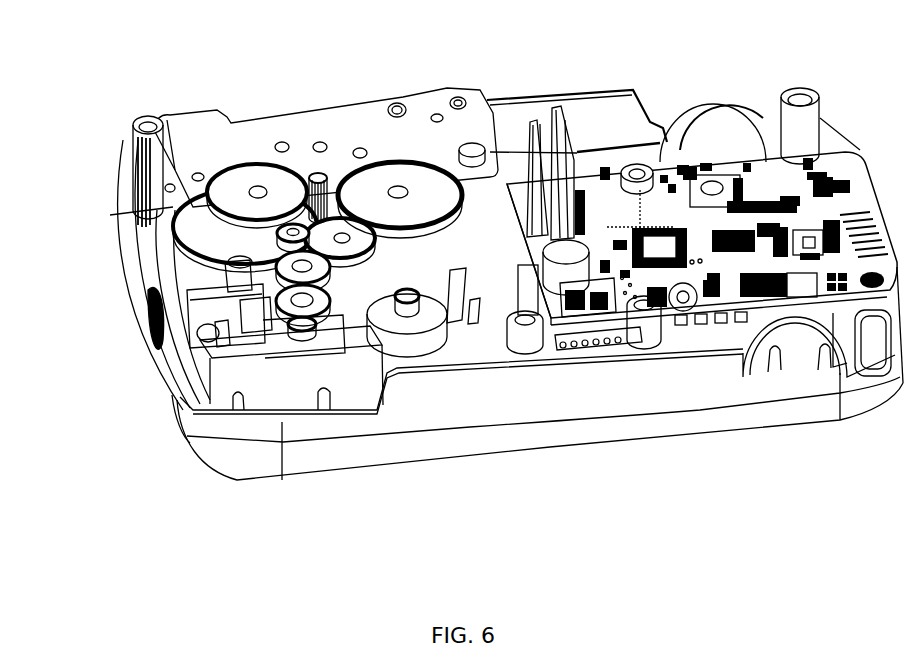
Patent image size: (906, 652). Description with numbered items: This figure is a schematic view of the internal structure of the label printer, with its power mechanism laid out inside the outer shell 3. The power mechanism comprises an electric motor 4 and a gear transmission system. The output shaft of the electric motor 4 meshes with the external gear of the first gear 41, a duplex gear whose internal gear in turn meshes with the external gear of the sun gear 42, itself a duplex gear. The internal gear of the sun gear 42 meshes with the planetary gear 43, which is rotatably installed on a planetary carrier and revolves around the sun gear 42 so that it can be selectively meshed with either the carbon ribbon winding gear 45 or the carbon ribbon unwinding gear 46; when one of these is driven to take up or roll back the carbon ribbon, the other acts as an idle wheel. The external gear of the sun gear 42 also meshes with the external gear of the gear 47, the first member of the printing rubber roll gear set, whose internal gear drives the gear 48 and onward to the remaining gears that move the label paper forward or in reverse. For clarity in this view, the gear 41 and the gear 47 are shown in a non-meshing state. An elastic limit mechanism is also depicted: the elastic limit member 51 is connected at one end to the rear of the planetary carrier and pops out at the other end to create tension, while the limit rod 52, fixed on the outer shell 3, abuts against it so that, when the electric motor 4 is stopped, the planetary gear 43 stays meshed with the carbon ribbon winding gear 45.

The outer shell 3 is at (432, 448).
The electric motor 4 is at (386, 370).
The first gear 41 is at (390, 177).
The sun gear 42 is at (313, 176).
The planetary gear 43 is at (233, 275).
The carbon ribbon winding gear 45 is at (200, 207).
The carbon ribbon unwinding gear 46 is at (253, 315).
The gear 47 is at (248, 173).
The gear 48 is at (146, 112).
The elastic limit member 51 is at (283, 308).
The limit rod 52 is at (295, 327).